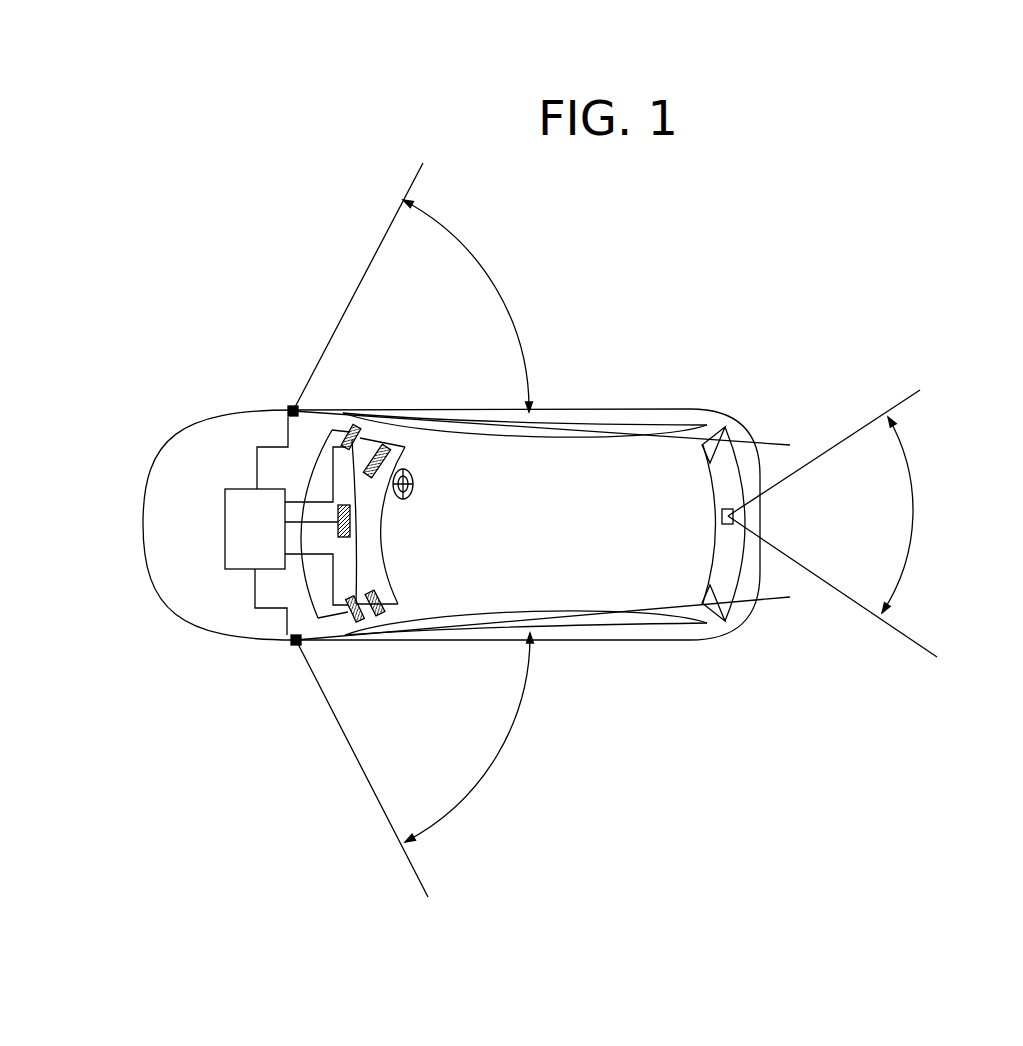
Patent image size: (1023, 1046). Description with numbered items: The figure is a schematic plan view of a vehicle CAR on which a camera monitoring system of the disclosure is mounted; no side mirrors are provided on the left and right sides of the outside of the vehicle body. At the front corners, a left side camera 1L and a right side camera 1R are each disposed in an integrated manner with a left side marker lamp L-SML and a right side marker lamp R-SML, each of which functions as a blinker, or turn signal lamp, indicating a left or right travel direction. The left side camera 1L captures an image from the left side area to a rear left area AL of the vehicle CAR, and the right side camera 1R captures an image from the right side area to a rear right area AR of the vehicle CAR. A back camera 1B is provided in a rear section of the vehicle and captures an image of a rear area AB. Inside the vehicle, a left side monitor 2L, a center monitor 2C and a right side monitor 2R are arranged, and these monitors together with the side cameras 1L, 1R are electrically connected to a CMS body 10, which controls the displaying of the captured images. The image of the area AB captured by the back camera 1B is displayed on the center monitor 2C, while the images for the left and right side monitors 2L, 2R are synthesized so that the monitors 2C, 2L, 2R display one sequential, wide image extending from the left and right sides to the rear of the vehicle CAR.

The vehicle CAR is at (145, 466).
The CMS body 10 is at (225, 550).
The right side camera 1R is at (290, 407).
The left side camera 1L is at (287, 642).
The back camera 1B is at (734, 519).
The right side monitor 2R is at (350, 426).
The center monitor 2C is at (350, 532).
The left side monitor 2L is at (352, 625).
The right side marker lamp R-SML is at (290, 405).
The left side marker lamp L-SML is at (292, 648).
The rear right area AR is at (430, 287).
The rear left area AL is at (434, 765).
The area captured by the back camera AB is at (854, 523).